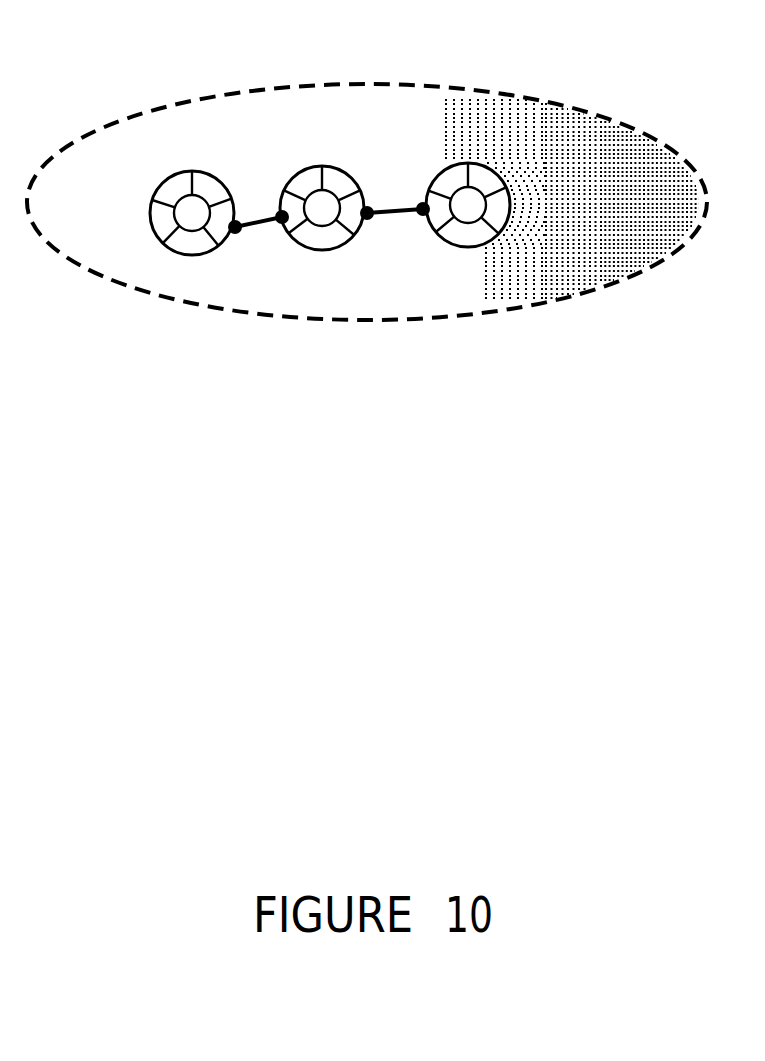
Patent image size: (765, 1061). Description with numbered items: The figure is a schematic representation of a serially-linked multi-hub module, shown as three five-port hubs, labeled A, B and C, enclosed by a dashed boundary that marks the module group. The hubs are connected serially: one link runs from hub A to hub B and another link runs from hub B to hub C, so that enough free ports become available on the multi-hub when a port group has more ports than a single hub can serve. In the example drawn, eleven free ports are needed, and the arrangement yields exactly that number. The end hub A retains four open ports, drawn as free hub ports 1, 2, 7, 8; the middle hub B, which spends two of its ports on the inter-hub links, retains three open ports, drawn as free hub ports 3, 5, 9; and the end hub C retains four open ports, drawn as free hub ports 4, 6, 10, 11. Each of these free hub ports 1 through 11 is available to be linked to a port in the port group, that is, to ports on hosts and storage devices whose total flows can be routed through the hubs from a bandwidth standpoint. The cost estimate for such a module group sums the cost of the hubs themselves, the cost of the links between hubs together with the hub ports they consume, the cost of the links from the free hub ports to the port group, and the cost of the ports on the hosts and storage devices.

The free hub port 1 is at (165, 180).
The free hub port 2 is at (215, 176).
The free hub port 3 is at (297, 165).
The free hub port 4 is at (440, 163).
The free hub port 5 is at (350, 173).
The free hub port 6 is at (495, 162).
The free hub port 7 is at (155, 231).
The free hub port 8 is at (185, 255).
The free hub port 9 is at (317, 250).
The free hub port 10 is at (462, 247).
The free hub port 11 is at (505, 222).